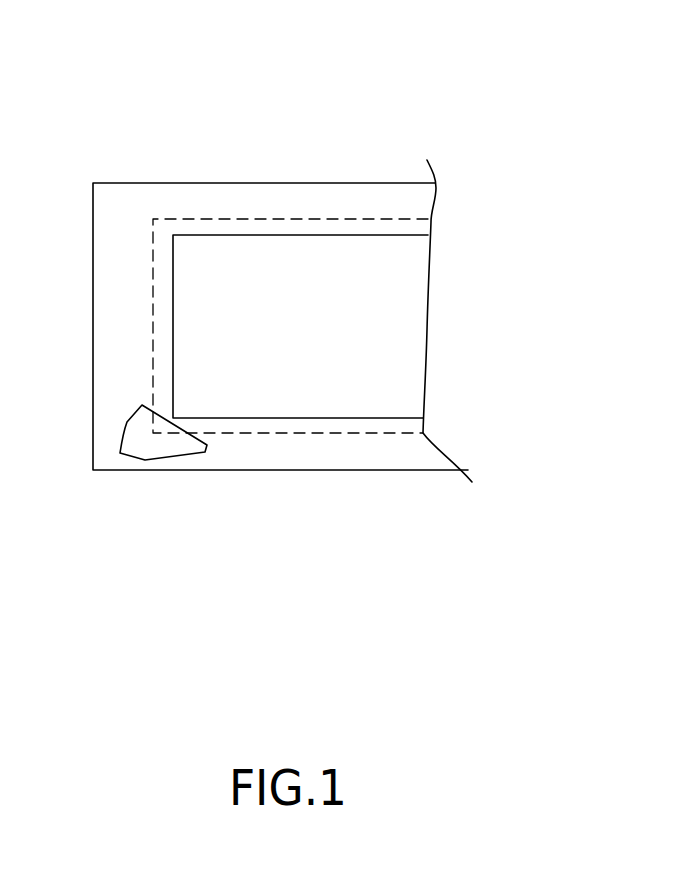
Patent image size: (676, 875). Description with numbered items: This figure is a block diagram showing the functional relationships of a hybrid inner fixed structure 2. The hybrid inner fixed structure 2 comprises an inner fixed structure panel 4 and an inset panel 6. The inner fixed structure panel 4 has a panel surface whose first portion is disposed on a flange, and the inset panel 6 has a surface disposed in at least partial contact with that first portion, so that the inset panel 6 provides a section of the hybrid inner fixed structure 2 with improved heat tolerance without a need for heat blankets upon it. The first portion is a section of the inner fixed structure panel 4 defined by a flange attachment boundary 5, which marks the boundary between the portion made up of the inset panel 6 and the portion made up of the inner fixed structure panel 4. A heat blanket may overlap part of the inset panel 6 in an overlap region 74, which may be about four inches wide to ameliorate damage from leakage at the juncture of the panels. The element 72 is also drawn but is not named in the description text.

The hybrid inner fixed structure 2 is at (257, 113).
The inner fixed structure panel 4 is at (145, 455).
The flange attachment boundary 5 is at (250, 418).
The inset panel 6 is at (398, 322).
The outer frame 72 is at (105, 457).
The overlap region 74 is at (437, 218).